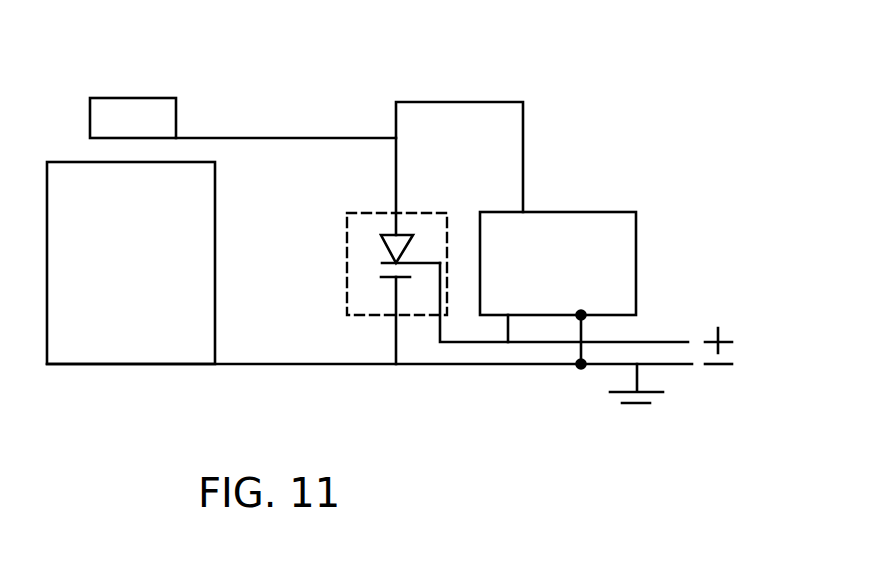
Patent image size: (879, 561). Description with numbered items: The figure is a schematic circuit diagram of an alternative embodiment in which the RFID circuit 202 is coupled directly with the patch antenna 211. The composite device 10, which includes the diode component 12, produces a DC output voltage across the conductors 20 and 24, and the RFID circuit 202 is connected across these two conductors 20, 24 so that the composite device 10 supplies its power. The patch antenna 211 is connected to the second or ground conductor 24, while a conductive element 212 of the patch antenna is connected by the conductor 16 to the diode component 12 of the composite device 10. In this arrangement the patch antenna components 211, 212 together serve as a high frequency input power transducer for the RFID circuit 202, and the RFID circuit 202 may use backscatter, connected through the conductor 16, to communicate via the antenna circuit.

The composite device 10 is at (425, 205).
The diode component 12 is at (388, 241).
The conductor 16 is at (263, 138).
The conductor 20 is at (463, 342).
The second or ground conductor 24 is at (447, 367).
The RFID circuit 202 is at (603, 228).
The patch antenna 211 is at (140, 350).
The conductive element 212 is at (127, 98).